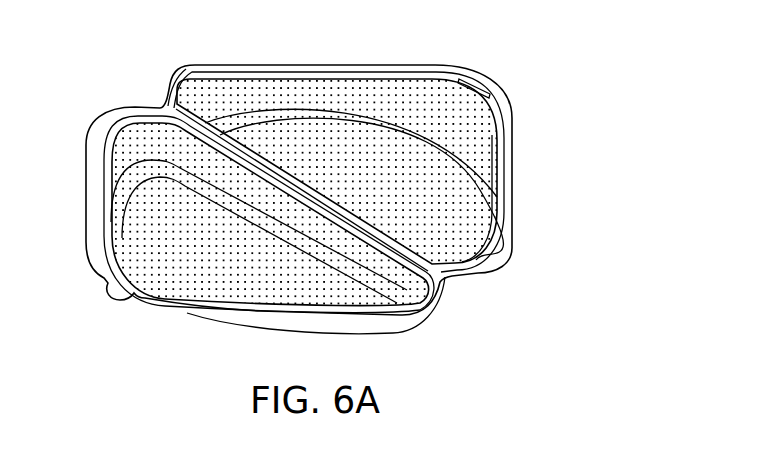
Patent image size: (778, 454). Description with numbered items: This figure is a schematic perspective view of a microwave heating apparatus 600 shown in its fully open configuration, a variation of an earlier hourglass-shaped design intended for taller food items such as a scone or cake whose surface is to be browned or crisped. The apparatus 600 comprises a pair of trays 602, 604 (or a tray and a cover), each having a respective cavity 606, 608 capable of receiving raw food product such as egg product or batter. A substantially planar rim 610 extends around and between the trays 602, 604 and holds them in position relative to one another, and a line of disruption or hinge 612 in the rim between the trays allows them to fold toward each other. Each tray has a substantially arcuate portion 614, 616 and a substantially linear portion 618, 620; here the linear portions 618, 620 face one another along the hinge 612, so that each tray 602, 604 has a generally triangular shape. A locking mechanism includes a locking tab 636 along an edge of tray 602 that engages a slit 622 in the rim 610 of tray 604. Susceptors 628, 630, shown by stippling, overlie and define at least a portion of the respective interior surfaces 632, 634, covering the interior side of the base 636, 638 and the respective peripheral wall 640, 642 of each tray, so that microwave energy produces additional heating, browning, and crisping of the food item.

The microwave heating apparatus 600 is at (580, 57).
The tray 602 is at (517, 258).
The tray 604 is at (418, 331).
The cavity 606 is at (278, 92).
The cavity 608 is at (128, 152).
The rim 610 is at (205, 72).
The line of disruption or hinge 612 is at (167, 100).
The arcuate portion 614 is at (438, 117).
The arcuate portion 616 is at (167, 290).
The linear portion 618 is at (393, 218).
The linear portion 620 is at (214, 165).
The slit 622 is at (480, 80).
The susceptor 628 is at (355, 85).
The susceptor 630 is at (112, 180).
The interior surface 632 is at (323, 151).
The interior surface 634 is at (317, 297).
The locking tab 636 is at (461, 220).
The base 638 is at (138, 246).
The peripheral wall 640 is at (450, 278).
The peripheral wall 642 is at (238, 315).